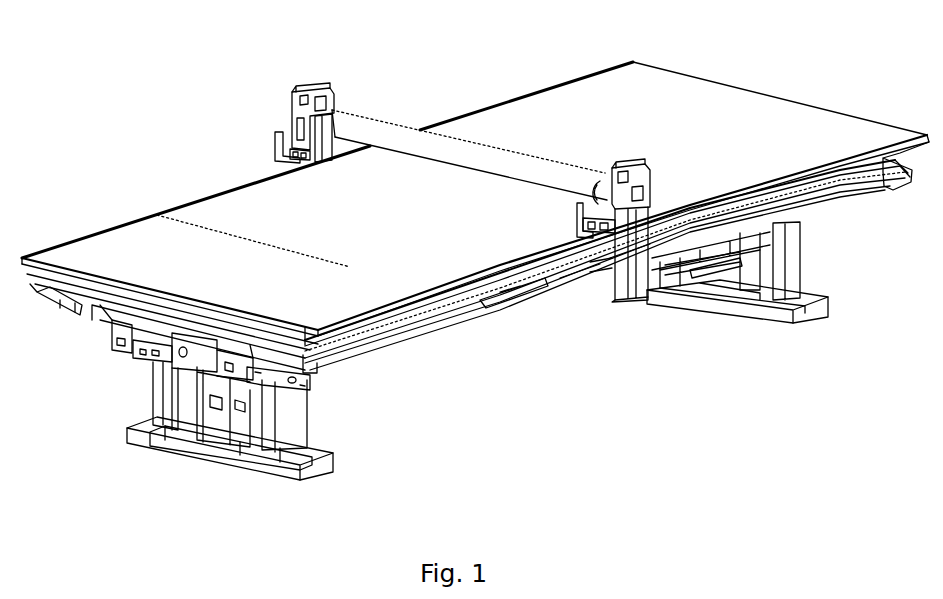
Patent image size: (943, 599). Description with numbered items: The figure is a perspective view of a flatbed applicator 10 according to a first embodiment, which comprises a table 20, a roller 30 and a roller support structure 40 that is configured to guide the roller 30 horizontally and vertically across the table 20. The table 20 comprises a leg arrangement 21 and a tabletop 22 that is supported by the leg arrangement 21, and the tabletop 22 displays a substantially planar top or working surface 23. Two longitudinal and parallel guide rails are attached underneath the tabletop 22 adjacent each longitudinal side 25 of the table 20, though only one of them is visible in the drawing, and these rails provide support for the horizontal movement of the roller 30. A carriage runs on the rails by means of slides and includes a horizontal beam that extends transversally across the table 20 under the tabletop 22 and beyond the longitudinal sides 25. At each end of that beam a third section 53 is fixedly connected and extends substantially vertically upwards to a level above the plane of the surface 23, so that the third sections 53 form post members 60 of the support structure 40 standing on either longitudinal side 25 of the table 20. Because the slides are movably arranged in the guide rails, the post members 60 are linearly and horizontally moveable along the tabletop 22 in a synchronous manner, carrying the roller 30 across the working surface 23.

The flatbed applicator 10 is at (402, 57).
The table 20 is at (200, 138).
The leg arrangement 21 is at (372, 424).
The tabletop 22 is at (175, 208).
The working surface 23 is at (353, 223).
The longitudinal side 25 is at (497, 147).
The roller 30 is at (498, 121).
The roller support structure 40 is at (610, 332).
The third section 53 is at (525, 211).
The post member 60 is at (267, 90).